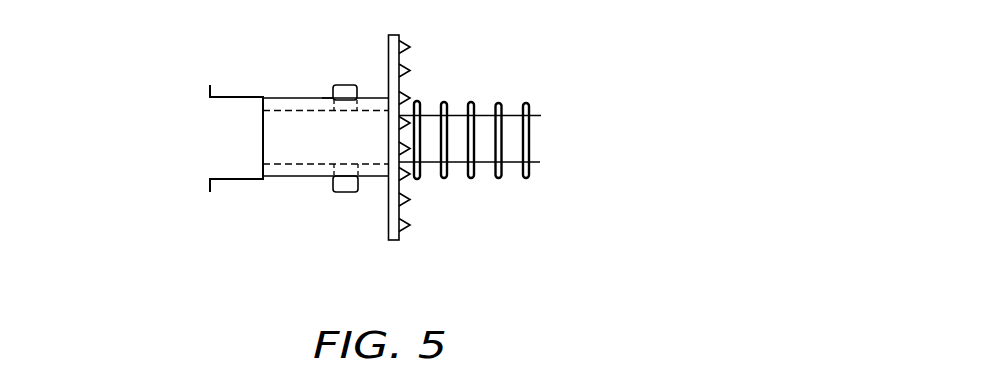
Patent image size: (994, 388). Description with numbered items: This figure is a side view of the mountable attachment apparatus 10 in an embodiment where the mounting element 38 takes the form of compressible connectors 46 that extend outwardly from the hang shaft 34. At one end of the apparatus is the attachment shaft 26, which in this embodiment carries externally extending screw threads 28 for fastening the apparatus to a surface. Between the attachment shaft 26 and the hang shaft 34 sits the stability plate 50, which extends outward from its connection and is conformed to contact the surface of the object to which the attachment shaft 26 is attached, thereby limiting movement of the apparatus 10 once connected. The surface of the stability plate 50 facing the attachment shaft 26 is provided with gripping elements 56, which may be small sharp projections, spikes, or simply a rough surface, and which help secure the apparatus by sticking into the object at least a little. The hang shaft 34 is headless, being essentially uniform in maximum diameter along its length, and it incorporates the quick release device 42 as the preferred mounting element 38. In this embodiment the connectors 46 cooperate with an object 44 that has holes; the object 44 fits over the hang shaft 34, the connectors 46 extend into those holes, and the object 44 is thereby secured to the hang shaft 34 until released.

The mountable attachment apparatus 10 is at (587, 41).
The attachment shaft 26 is at (512, 165).
The screw threads 28 is at (526, 104).
The hang shaft 34 is at (375, 165).
The mounting element 38 is at (332, 179).
The quick release device 42 is at (326, 90).
The object 44 is at (235, 97).
The connector 46 is at (347, 84).
The stability plate 50 is at (398, 242).
The gripping element 56 is at (411, 70).